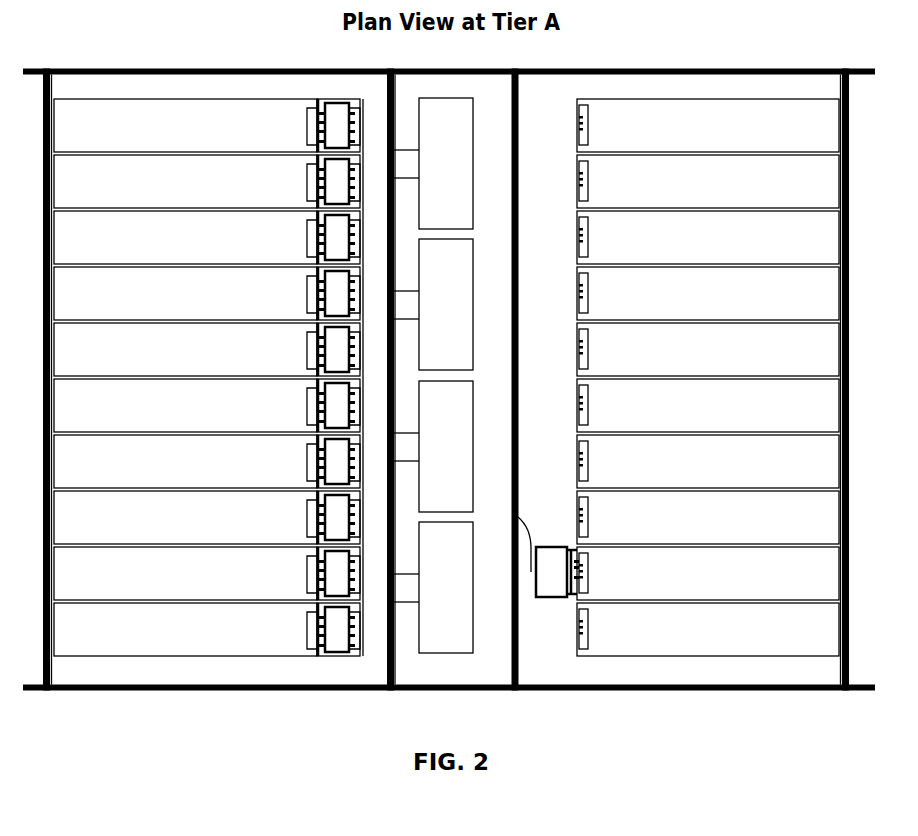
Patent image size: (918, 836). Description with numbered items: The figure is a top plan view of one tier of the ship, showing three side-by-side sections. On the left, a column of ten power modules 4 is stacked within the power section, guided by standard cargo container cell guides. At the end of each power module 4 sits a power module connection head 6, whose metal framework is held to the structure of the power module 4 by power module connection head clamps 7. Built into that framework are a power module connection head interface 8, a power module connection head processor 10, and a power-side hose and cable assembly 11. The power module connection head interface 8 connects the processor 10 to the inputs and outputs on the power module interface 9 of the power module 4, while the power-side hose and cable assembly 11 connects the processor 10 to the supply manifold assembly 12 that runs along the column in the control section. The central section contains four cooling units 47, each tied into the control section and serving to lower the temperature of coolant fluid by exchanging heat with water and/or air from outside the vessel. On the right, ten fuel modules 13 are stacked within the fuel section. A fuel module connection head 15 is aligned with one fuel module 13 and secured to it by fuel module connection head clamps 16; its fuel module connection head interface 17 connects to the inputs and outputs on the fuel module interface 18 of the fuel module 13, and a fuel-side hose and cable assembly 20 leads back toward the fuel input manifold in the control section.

The power module 4 is at (178, 133).
The cooling unit 47 is at (438, 172).
The fuel module 13 is at (702, 133).
The supply manifold assembly 12 is at (382, 385).
The power module connection head processor 10 is at (330, 636).
The power module connection head 6 is at (341, 655).
The power module connection head clamps 7 is at (319, 614).
The power module connection head interface 8 is at (315, 629).
The power module interface 9 is at (306, 628).
The power-side hose and cable assembly 11 is at (355, 641).
The fuel module connection head 15 is at (556, 546).
The fuel module connection head clamps 16 is at (572, 550).
The fuel module connection head interface 17 is at (570, 578).
The fuel module interface 18 is at (585, 572).
The fuel-side hose and cable assembly 20 is at (531, 572).